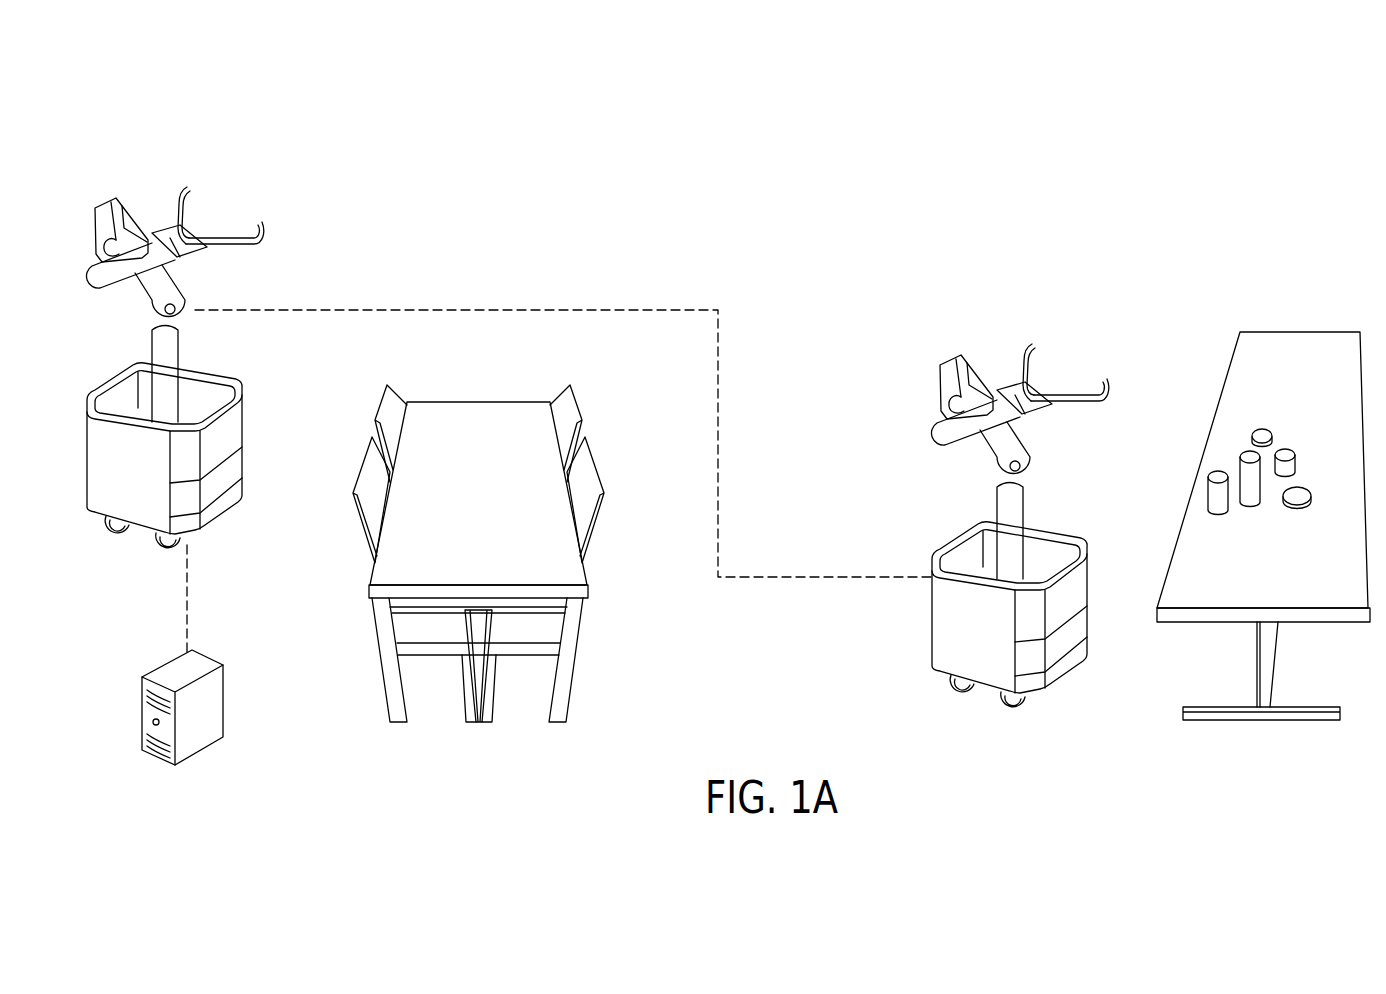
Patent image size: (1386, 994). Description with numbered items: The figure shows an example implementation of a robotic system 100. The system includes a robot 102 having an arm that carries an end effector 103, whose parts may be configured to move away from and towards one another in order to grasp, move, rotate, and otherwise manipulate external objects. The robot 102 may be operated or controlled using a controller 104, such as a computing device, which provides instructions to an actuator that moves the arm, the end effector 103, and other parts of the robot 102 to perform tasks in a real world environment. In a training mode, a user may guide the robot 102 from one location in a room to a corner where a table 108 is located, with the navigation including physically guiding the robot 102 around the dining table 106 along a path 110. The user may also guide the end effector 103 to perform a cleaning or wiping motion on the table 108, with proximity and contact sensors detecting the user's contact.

The robotic system 100 is at (1226, 146).
The robot 102 is at (118, 195).
The end effector 103 is at (187, 188).
The controller 104 is at (142, 712).
The dining table 106 is at (494, 406).
The table 108 is at (1327, 342).
The path 110 is at (632, 308).